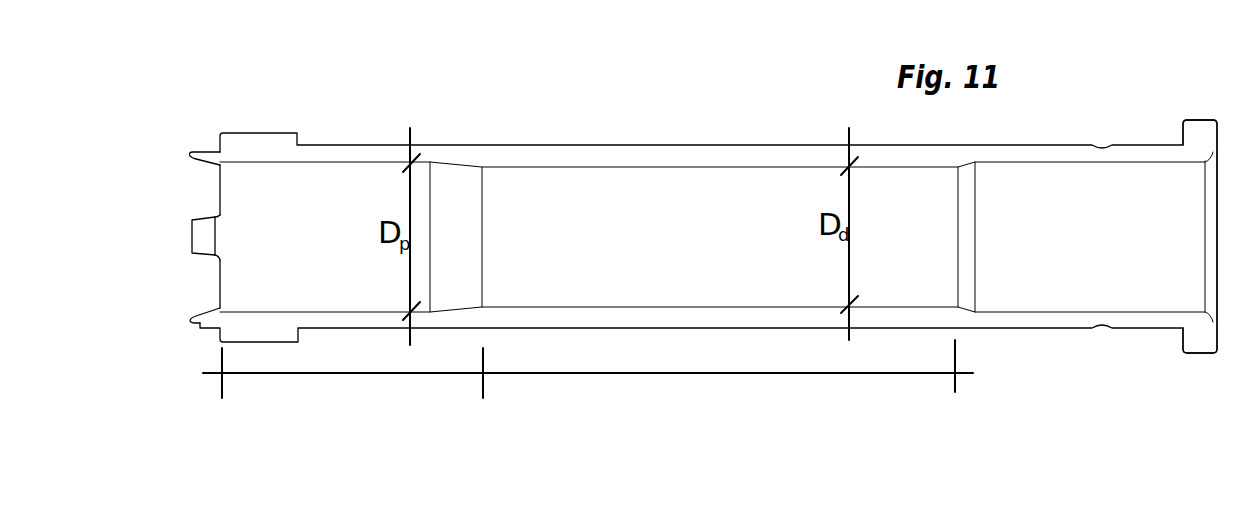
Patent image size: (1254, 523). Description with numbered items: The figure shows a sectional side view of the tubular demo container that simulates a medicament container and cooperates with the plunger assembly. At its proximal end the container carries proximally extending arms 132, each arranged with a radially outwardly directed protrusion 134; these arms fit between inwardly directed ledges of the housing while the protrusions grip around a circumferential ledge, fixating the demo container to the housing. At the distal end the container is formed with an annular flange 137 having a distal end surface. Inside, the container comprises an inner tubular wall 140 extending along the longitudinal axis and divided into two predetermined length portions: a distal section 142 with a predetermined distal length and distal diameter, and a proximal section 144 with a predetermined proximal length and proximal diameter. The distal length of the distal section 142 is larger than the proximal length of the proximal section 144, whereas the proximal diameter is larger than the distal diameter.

The proximally extending arm 132 is at (203, 230).
The radially outwardly directed protrusion 134 is at (195, 152).
The annular flange 137 is at (1192, 133).
The inner tubular wall 140 is at (698, 167).
The distal section 142 is at (728, 376).
The proximal section 144 is at (343, 377).